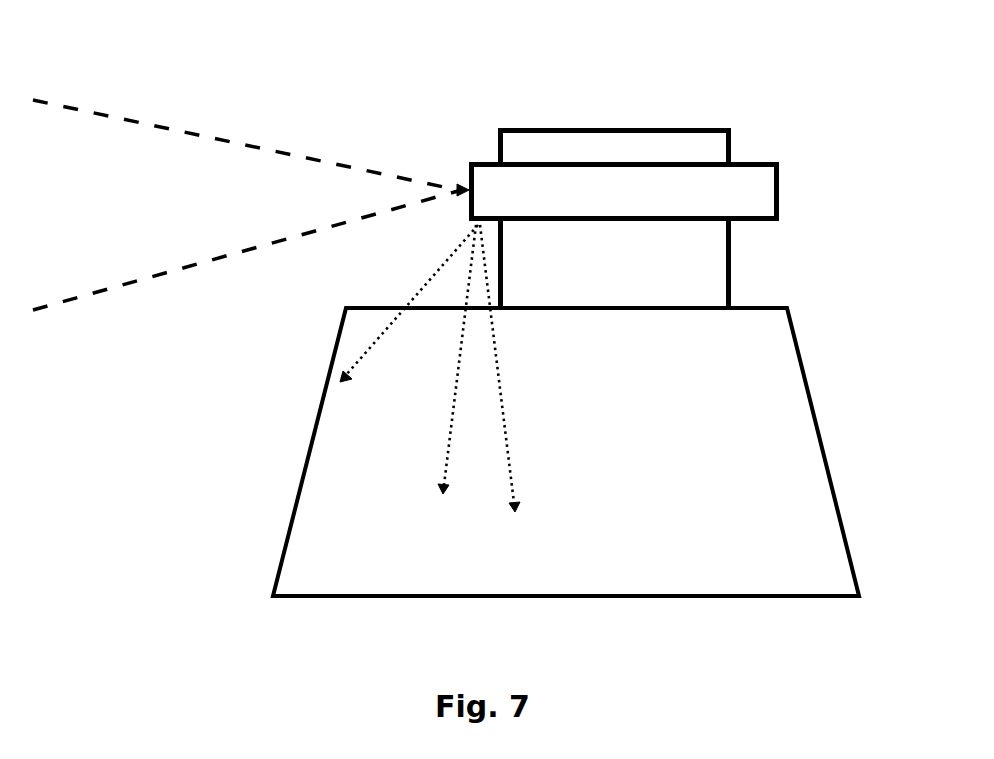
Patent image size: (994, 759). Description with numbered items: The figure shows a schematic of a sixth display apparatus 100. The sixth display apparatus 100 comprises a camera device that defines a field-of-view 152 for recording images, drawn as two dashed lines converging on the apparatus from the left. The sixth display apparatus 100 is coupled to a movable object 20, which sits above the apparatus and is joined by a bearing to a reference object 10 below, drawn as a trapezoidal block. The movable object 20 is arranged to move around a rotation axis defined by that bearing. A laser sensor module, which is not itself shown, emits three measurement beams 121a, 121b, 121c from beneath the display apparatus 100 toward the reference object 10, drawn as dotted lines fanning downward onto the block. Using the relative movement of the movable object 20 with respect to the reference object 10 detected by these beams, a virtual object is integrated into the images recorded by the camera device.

The reference object 10 is at (790, 398).
The movable object 20 is at (667, 128).
The sixth display apparatus 100 is at (478, 158).
The field-of-view 152 is at (57, 303).
The measurement beam 121a is at (387, 325).
The measurement beam 121b is at (453, 417).
The measurement beam 121c is at (508, 453).